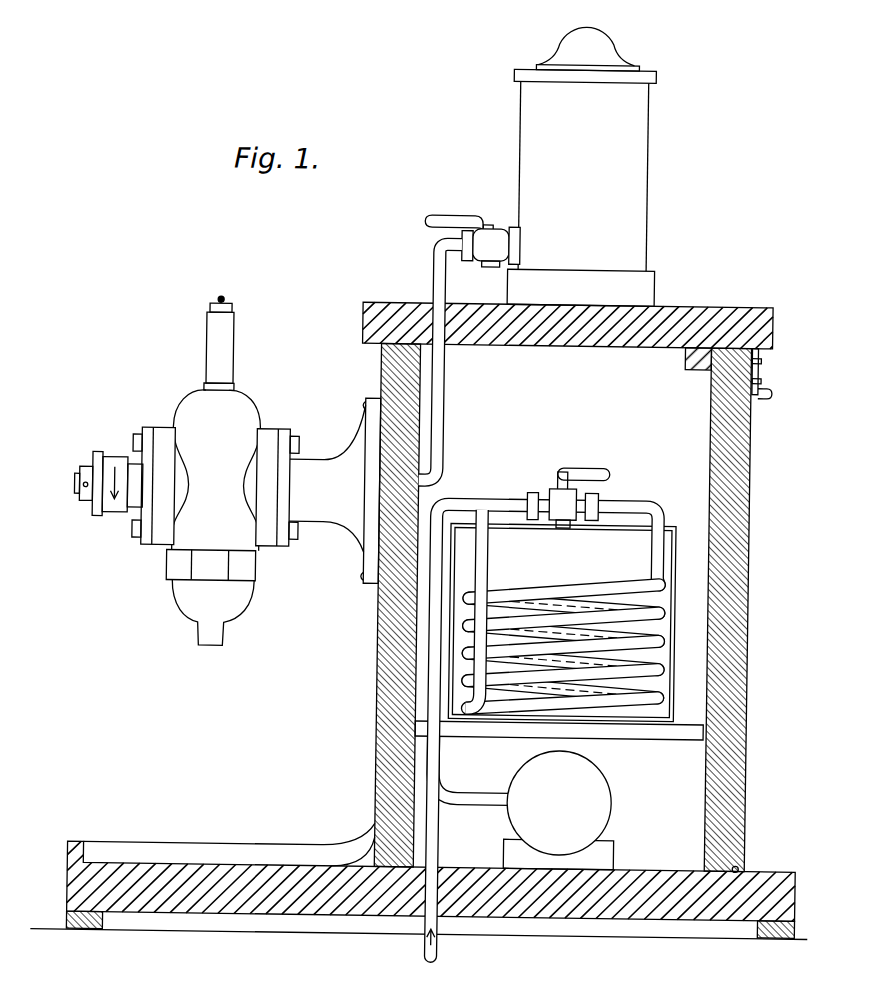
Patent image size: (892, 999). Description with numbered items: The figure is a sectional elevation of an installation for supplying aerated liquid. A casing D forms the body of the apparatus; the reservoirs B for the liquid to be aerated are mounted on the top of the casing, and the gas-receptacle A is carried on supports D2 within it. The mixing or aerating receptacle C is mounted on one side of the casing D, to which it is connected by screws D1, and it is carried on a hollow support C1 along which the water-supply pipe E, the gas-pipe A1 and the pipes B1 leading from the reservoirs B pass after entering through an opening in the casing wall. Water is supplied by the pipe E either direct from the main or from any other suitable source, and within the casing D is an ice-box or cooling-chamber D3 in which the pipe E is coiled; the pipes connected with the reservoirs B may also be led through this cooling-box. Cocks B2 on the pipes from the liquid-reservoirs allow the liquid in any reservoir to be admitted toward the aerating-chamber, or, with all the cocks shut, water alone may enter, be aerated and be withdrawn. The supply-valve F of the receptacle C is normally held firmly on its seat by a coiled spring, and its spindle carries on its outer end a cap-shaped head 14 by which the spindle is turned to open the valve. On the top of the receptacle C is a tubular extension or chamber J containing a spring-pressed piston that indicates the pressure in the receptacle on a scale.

The gas-receptacle A is at (558, 802).
The gas-pipe A1 is at (480, 800).
The reservoirs B is at (582, 166).
The pipes leading from the reservoirs B1 is at (441, 352).
The valves or cocks B2 is at (458, 244).
The mixing or aerating chamber C is at (215, 517).
The hollow support C1 is at (327, 478).
The casing D is at (423, 619).
The screws D1 is at (363, 408).
The supports D2 is at (612, 858).
The ice-box or cooling-chamber D3 is at (650, 721).
The water-supply pipe E is at (446, 504).
The valve F is at (112, 518).
The cap-shaped head 14 is at (113, 517).
The tubular extension or chamber J is at (225, 345).